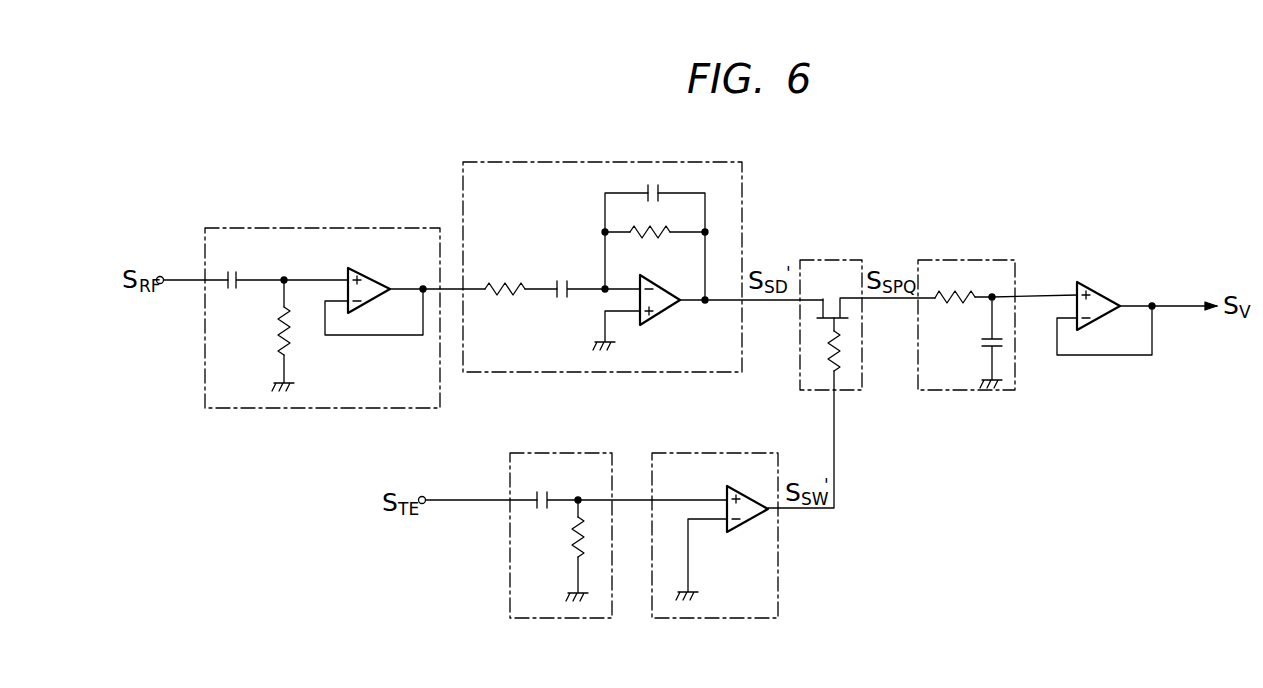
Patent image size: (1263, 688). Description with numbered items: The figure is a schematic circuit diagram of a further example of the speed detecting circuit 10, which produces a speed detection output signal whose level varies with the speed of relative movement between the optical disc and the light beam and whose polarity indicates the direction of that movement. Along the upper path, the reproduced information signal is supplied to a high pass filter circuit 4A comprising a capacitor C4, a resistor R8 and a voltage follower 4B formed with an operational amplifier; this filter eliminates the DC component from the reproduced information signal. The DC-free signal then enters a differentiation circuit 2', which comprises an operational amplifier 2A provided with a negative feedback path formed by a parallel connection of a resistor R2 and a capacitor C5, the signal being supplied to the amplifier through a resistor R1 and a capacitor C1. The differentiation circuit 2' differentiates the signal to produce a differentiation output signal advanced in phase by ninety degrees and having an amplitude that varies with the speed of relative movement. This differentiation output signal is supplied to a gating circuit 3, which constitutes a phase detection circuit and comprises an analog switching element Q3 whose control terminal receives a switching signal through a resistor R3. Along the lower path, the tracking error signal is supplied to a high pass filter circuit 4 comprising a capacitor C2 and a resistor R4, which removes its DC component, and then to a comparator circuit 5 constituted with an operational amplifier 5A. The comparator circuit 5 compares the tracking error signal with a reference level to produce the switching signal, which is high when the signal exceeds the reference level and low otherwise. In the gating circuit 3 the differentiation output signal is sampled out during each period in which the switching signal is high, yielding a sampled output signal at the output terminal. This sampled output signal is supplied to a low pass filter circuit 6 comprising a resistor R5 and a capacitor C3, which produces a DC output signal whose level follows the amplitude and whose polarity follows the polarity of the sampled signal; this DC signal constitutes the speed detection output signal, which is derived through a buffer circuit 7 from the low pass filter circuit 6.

The speed detecting circuit 10 is at (874, 198).
The high pass filter circuit 4A is at (260, 224).
The voltage follower 4B is at (378, 278).
The capacitor C4 is at (285, 269).
The resistor R8 is at (273, 335).
The differentiation circuit 2' is at (602, 245).
The resistor R1 is at (521, 276).
The capacitor C1 is at (595, 276).
The operational amplifier 2A is at (673, 312).
The capacitor C5 is at (656, 182).
The negative feedback resistor R2 is at (650, 220).
The gating circuit 3 is at (808, 258).
The analog switching element Q3 is at (876, 294).
The resistor R3 is at (817, 413).
The low pass filter circuit 6 is at (928, 258).
The resistor R5 is at (1006, 312).
The capacitor C3 is at (982, 342).
The buffer circuit 7 is at (1098, 290).
The high pass filter circuit 4 is at (522, 452).
The capacitor C2 is at (630, 489).
The resistor R4 is at (566, 550).
The comparator circuit 5 is at (670, 452).
The operational amplifier 5A is at (745, 530).